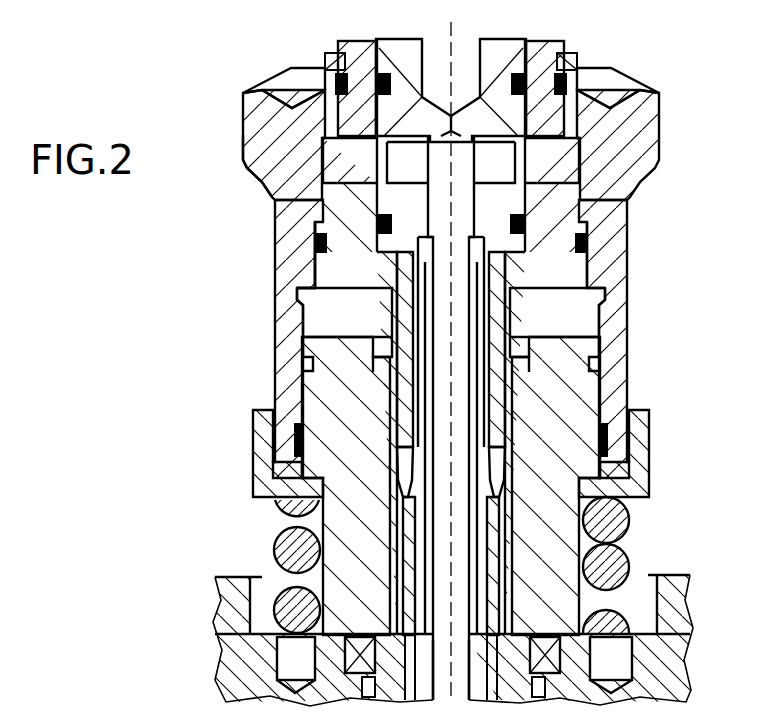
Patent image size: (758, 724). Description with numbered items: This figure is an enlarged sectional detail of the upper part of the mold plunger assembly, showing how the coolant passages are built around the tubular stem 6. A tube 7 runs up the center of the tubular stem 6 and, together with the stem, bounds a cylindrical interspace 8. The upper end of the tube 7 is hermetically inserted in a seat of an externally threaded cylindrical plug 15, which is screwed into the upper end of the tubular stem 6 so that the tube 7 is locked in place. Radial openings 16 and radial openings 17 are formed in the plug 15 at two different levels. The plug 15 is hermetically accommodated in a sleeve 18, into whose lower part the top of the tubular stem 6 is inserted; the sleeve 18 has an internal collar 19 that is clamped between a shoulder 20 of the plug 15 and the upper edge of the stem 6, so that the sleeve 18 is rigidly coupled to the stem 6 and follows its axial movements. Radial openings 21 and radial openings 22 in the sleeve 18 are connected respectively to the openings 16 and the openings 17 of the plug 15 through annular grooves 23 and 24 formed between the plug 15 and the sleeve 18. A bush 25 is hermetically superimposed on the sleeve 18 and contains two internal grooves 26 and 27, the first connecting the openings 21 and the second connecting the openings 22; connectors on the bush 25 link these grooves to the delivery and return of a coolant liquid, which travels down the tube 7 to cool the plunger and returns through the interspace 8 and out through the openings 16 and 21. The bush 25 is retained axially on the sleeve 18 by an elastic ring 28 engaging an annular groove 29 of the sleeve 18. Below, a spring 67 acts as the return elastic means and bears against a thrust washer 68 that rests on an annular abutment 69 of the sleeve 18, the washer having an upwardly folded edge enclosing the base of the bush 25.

The tubular stem 6 is at (503, 587).
The tube 7 is at (428, 688).
The cylindrical interspace 8 is at (500, 553).
The cylindrical plug 15 is at (397, 62).
The radial openings 16 is at (500, 320).
The radial openings 17 is at (520, 200).
The sleeve 18 is at (335, 50).
The internal collar 19 is at (517, 350).
The shoulder 20 is at (523, 240).
The radial openings 21 is at (328, 318).
The radial openings 22 is at (318, 195).
The annular groove 23 is at (530, 280).
The annular groove 24 is at (420, 178).
The bush 25 is at (243, 118).
The groove 26 is at (298, 300).
The groove 27 is at (268, 160).
The elastic ring 28 is at (575, 65).
The annular groove 29 is at (570, 55).
The spring 67 is at (285, 532).
The thrust washer 68 is at (253, 440).
The annular abutment 69 is at (572, 432).